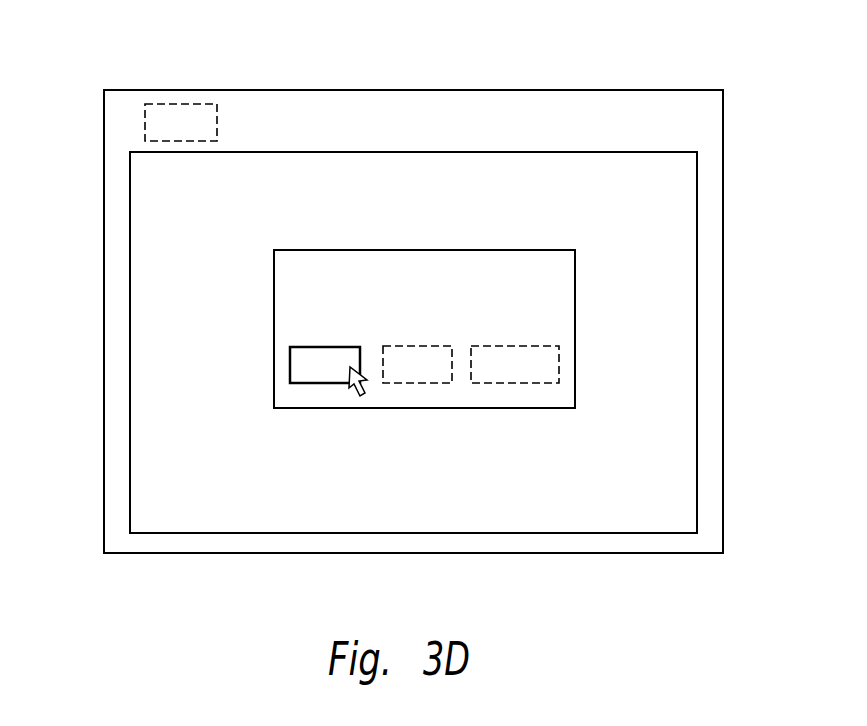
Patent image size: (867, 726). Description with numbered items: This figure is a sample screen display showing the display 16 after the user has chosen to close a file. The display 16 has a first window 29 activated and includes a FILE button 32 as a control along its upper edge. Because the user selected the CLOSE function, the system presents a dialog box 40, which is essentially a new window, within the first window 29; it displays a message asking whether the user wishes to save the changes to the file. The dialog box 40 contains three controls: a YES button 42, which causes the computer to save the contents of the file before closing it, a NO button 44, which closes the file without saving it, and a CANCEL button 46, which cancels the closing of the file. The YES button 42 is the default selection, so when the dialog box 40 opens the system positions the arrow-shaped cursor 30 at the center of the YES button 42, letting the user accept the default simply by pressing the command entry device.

The display 16 is at (722, 326).
The first window 29 is at (697, 227).
The FILE button 32 is at (145, 122).
The dialog box 40 is at (577, 339).
The YES button 42 is at (290, 368).
The NO button 44 is at (410, 384).
The CANCEL button 46 is at (515, 384).
The cursor 30 is at (366, 392).